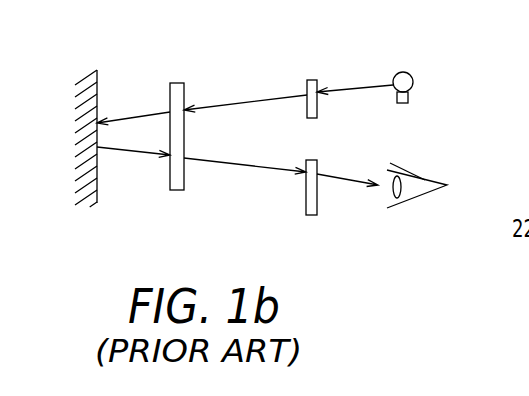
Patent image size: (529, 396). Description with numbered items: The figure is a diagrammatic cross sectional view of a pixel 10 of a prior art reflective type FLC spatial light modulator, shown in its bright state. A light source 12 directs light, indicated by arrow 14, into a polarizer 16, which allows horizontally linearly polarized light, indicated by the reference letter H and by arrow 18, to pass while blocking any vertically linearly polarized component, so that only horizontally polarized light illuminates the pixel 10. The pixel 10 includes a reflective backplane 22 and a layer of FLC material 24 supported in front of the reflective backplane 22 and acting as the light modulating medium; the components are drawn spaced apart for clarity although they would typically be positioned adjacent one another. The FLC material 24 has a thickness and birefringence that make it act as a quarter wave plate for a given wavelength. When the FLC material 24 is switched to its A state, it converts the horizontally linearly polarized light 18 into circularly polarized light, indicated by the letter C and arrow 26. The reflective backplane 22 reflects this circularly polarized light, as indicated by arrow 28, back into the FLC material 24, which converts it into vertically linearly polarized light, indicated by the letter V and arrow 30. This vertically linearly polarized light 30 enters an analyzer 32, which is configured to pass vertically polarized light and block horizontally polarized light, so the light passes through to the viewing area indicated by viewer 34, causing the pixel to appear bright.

The pixel 10 is at (221, 54).
The light source 12 is at (400, 73).
The arrow indicating light from light source 14 is at (338, 87).
The polarizer 16 is at (318, 118).
The arrow indicating horizontally linearly polarized light 18 is at (230, 101).
The reflective backplane 22 is at (95, 204).
The layer of FLC material 24 is at (184, 188).
The arrow indicating circularly polarized light 26 is at (163, 112).
The arrow indicating reflected circularly polarized light 28 is at (139, 155).
The arrow indicating vertically linearly polarized light 30 is at (272, 170).
The analyzer 32 is at (321, 210).
The viewer 34 is at (413, 176).